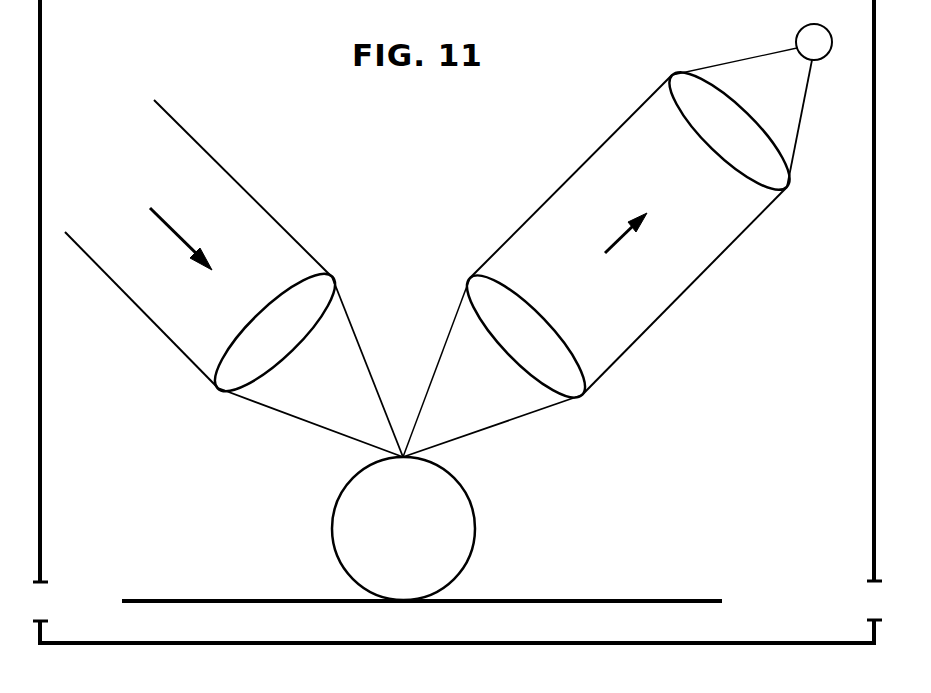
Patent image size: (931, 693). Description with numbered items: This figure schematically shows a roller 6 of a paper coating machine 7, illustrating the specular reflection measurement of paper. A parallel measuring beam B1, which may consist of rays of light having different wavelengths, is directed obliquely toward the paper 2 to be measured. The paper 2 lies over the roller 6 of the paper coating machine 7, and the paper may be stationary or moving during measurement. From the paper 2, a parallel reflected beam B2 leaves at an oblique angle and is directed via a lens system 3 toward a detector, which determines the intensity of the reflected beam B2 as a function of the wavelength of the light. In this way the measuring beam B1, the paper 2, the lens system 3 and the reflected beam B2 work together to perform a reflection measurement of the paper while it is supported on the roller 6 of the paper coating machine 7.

The paper coating machine 7 is at (333, 275).
The lens system 3 is at (470, 278).
The parallel measuring beam B1 is at (207, 148).
The parallel reflected beam B2 is at (593, 153).
The roller 6 is at (472, 528).
The paper sample 2 is at (638, 599).